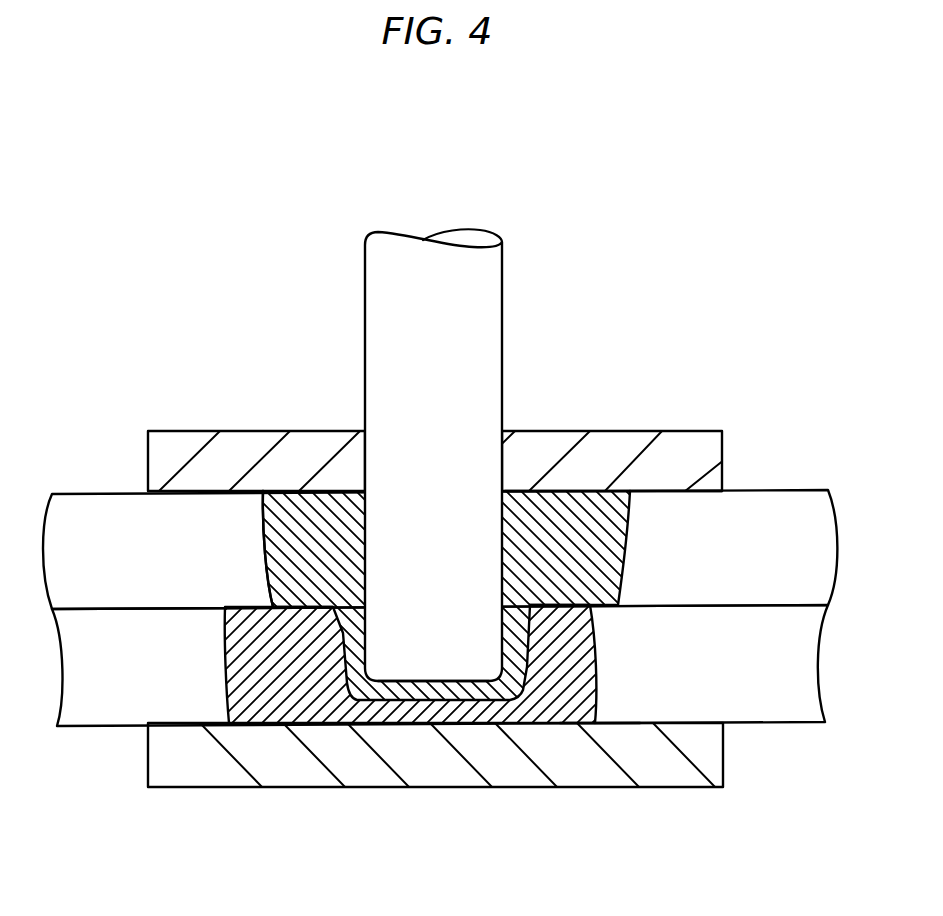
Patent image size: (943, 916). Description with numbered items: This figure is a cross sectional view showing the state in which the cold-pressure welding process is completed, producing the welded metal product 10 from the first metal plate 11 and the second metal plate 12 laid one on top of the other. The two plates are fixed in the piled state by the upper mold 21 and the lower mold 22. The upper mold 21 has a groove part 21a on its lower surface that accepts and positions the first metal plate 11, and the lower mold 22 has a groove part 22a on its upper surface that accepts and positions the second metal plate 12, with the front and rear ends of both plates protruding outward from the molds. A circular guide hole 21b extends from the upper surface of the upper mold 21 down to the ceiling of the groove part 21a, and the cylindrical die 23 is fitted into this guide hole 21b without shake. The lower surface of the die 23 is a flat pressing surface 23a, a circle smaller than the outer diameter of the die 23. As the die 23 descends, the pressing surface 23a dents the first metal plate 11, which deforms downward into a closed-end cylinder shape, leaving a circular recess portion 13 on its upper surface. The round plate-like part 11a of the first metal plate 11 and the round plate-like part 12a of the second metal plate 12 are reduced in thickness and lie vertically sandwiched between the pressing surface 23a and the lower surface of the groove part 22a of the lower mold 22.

The welded metal product 10 is at (440, 581).
The first metal plate 11 is at (757, 537).
The round plate-like part 11a is at (453, 688).
The second metal plate 12 is at (772, 695).
The round plate-like part 12a is at (430, 713).
The circular recess portion 13 is at (366, 572).
The upper mold 21 is at (454, 396).
The groove part 21a is at (590, 492).
The guide hole 21b is at (364, 440).
The lower mold 22 is at (435, 794).
The groove part 22a is at (608, 720).
The die 23 is at (419, 515).
The pressing surface 23a is at (412, 683).